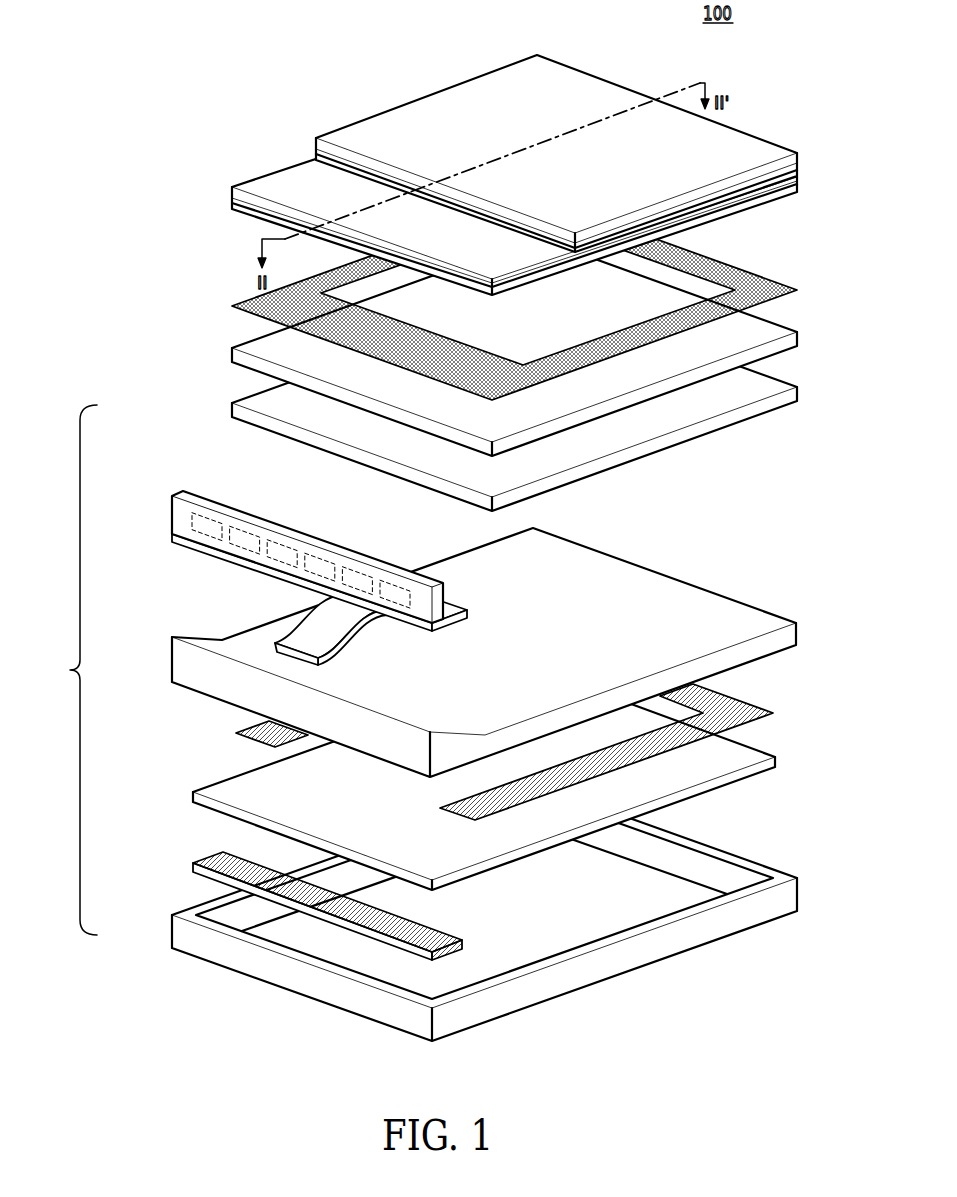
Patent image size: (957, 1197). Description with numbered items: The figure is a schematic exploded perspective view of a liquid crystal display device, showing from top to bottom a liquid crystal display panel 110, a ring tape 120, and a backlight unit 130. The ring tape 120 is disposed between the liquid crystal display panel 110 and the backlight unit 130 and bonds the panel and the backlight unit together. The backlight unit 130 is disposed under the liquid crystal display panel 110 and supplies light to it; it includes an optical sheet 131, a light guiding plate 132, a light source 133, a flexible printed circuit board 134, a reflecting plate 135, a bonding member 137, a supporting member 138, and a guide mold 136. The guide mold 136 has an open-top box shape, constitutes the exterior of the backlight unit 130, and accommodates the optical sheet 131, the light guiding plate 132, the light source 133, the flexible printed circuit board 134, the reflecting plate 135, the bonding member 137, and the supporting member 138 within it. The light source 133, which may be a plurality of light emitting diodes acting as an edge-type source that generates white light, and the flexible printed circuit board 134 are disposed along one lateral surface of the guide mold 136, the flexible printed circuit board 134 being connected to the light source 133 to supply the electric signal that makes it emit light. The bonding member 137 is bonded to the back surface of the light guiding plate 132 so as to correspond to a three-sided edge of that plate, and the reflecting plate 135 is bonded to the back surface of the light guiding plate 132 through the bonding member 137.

The liquid crystal display panel 110 is at (778, 121).
The ring tape 120 is at (762, 289).
The backlight unit 130 is at (66, 670).
The optical sheet 131 is at (232, 403).
The light guiding plate 132 is at (185, 658).
The light source 133 is at (178, 517).
The flexible printed circuit board 134 is at (178, 537).
The reflecting plate 135 is at (195, 800).
The guide mold 136 is at (190, 937).
The bonding member 137 is at (236, 733).
The supporting member 138 is at (200, 862).